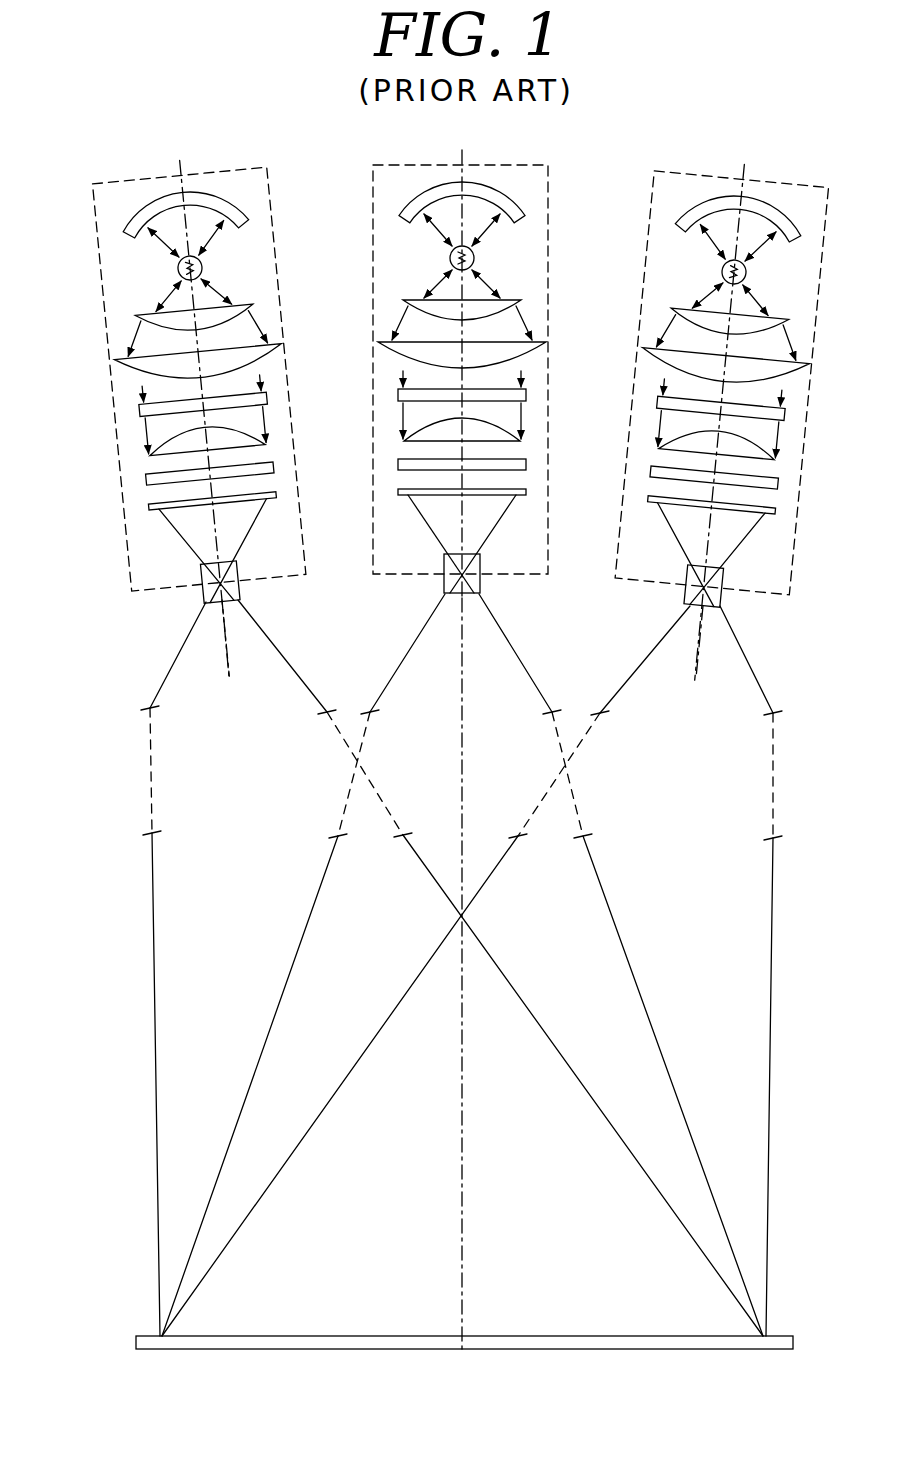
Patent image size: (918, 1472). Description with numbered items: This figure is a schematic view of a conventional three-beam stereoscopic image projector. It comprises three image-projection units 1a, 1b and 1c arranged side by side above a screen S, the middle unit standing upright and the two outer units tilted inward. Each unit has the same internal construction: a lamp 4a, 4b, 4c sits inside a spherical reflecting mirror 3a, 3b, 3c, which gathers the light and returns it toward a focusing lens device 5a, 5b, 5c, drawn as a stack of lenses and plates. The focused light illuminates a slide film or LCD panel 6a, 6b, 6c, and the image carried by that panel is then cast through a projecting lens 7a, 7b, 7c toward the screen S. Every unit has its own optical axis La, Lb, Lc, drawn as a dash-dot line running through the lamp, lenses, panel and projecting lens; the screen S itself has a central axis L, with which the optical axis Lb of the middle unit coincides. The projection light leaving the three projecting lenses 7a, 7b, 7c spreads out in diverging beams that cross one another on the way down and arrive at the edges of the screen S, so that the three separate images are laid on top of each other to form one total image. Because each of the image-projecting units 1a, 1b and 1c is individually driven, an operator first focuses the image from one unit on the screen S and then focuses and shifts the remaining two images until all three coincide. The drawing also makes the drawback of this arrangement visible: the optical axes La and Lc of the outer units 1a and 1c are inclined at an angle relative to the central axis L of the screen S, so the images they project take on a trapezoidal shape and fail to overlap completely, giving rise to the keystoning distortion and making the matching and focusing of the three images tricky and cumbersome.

The image-projection unit 1a is at (117, 486).
The image-projection unit 1b is at (371, 467).
The image-projection unit 1c is at (624, 478).
The spherical reflecting mirror 3a is at (217, 196).
The spherical reflecting mirror 3b is at (500, 197).
The spherical reflecting mirror 3c is at (778, 208).
The lamp 4a is at (203, 266).
The lamp 4b is at (476, 260).
The lamp 4c is at (748, 273).
The focusing lens device 5a is at (92, 314).
The focusing lens device 5b is at (360, 413).
The focusing lens device 5c is at (628, 414).
The slide film or LCD panel 6a is at (265, 498).
The slide film or LCD panel 6b is at (517, 498).
The slide film or LCD panel 6c is at (762, 512).
The projecting lens 7a is at (241, 593).
The projecting lens 7b is at (481, 586).
The projecting lens 7c is at (722, 600).
The optical axis La is at (226, 640).
The optical axis Lb is at (461, 655).
The optical axis Lc is at (697, 655).
The central axis L is at (462, 1085).
The screen S is at (778, 1338).